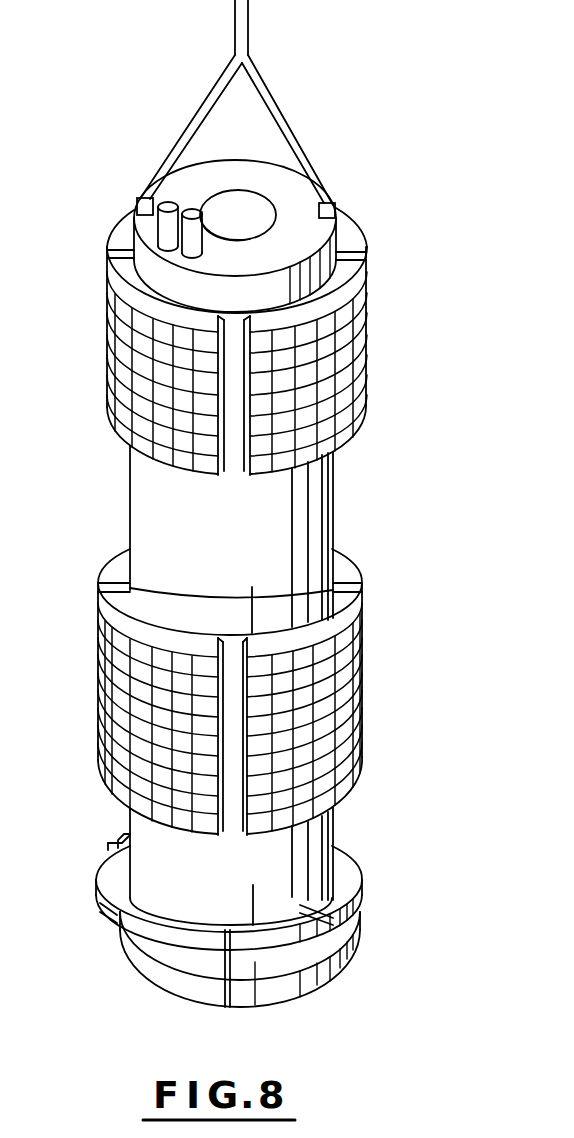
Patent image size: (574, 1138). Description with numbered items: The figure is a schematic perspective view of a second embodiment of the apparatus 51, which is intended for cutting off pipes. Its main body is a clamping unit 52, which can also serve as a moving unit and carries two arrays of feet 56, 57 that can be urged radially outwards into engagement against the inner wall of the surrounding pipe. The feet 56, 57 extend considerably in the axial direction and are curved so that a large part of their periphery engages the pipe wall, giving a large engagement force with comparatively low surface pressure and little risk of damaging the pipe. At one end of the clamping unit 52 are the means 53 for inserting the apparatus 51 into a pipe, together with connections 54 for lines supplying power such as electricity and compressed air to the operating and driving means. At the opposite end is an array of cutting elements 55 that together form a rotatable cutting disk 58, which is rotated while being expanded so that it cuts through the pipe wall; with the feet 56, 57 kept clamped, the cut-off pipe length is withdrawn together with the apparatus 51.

The apparatus 51 is at (348, 509).
The clamping unit 52 is at (247, 558).
The means for inserting the apparatus 53 is at (249, 22).
The connections 54 is at (187, 243).
The cutting elements 55 is at (146, 966).
The feet 56 is at (358, 698).
The feet 57 is at (366, 340).
The rotatable cutting disk 58 is at (372, 897).